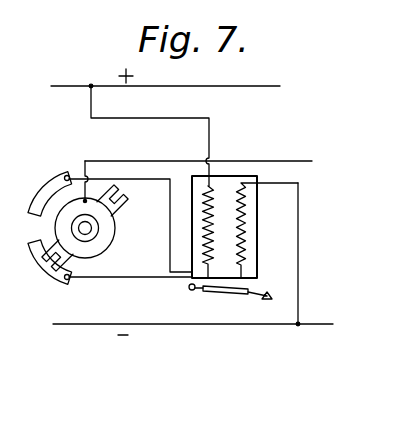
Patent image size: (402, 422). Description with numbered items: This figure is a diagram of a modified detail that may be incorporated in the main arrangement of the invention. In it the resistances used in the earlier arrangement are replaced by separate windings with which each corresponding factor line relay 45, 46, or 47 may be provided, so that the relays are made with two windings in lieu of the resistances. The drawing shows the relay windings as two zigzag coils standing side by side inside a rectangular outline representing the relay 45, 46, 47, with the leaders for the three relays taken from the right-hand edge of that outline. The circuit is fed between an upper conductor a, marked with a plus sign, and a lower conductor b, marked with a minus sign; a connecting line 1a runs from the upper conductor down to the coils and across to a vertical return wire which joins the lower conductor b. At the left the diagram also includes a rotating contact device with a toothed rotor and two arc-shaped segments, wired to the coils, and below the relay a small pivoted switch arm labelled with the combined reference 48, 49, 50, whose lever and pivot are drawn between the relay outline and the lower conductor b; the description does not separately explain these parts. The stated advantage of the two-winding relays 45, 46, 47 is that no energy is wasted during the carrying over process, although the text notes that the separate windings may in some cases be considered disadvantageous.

The positive supply conductor a is at (165, 75).
The negative supply conductor b is at (193, 339).
The connecting wire 1a is at (272, 161).
The factor line relay 45 is at (257, 206).
The factor line relay 46 is at (205, 226).
The factor line relay 47 is at (245, 248).
The switch contact 48 is at (216, 291).
The switch lever 49 is at (225, 290).
The switch pivot 50 is at (260, 295).